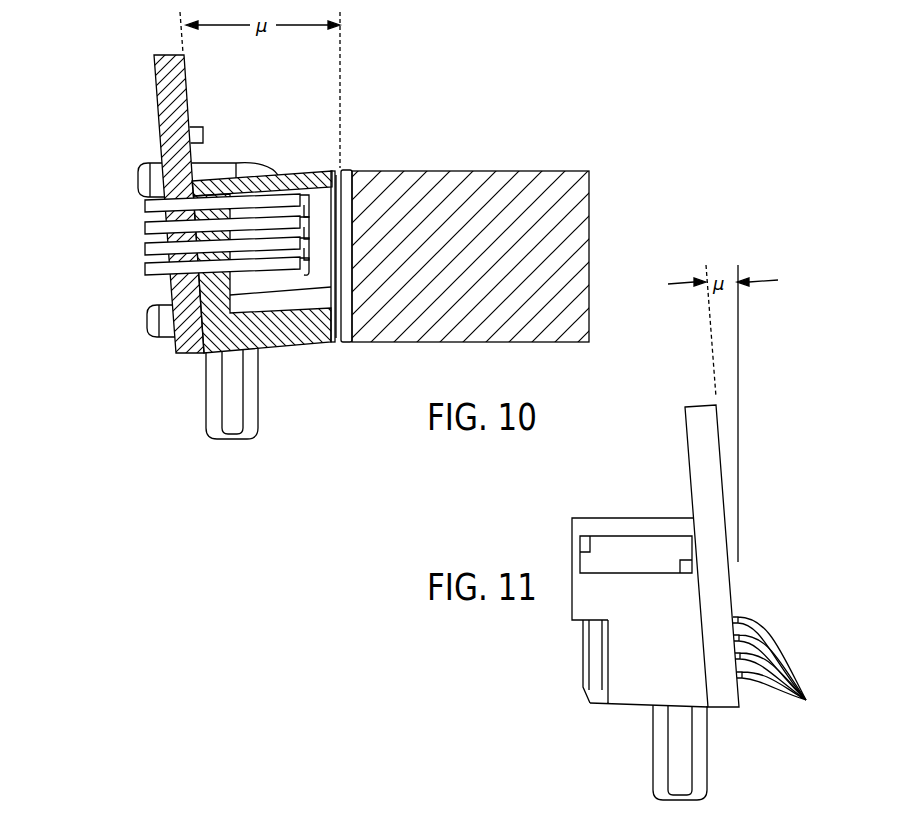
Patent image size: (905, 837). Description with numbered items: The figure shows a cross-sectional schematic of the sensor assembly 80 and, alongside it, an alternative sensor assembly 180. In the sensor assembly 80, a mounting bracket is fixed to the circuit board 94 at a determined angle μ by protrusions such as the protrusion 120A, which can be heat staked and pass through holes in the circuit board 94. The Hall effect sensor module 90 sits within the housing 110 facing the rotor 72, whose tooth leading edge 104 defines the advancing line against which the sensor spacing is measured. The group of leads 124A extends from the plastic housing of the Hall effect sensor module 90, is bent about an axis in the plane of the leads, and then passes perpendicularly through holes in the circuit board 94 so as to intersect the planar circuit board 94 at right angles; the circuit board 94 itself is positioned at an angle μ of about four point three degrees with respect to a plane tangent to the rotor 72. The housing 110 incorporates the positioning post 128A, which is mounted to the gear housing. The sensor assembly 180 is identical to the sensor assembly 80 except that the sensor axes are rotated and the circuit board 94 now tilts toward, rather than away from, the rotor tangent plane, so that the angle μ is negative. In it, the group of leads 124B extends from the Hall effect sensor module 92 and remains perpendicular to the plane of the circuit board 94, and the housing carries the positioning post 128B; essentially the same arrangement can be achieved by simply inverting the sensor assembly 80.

In FIG. 10, the sensor assembly 80 is at (136, 86).
In FIG. 11, the sensor assembly 80 is at (678, 621).
In FIG. 10, the circuit board 94 is at (186, 82).
In FIG. 11, the circuit board 94 is at (731, 577).
In FIG. 10, the protrusion 120A is at (147, 163).
In FIG. 10, the group of leads 124A is at (145, 206).
In FIG. 10, the housing 110 is at (300, 168).
In FIG. 11, the housing 110 is at (618, 518).
In FIG. 10, the leading edge 104 is at (345, 168).
In FIG. 10, the Hall effect sensor module 90 is at (340, 233).
In FIG. 10, the rotor 72 is at (536, 171).
In FIG. 10, the positioning post 128A is at (258, 385).
In FIG. 11, the sensor assembly 180 is at (758, 510).
In FIG. 11, the Hall effect sensor module 92 is at (569, 661).
In FIG. 11, the group of leads 124B is at (801, 665).
In FIG. 11, the positioning post 128B is at (653, 757).